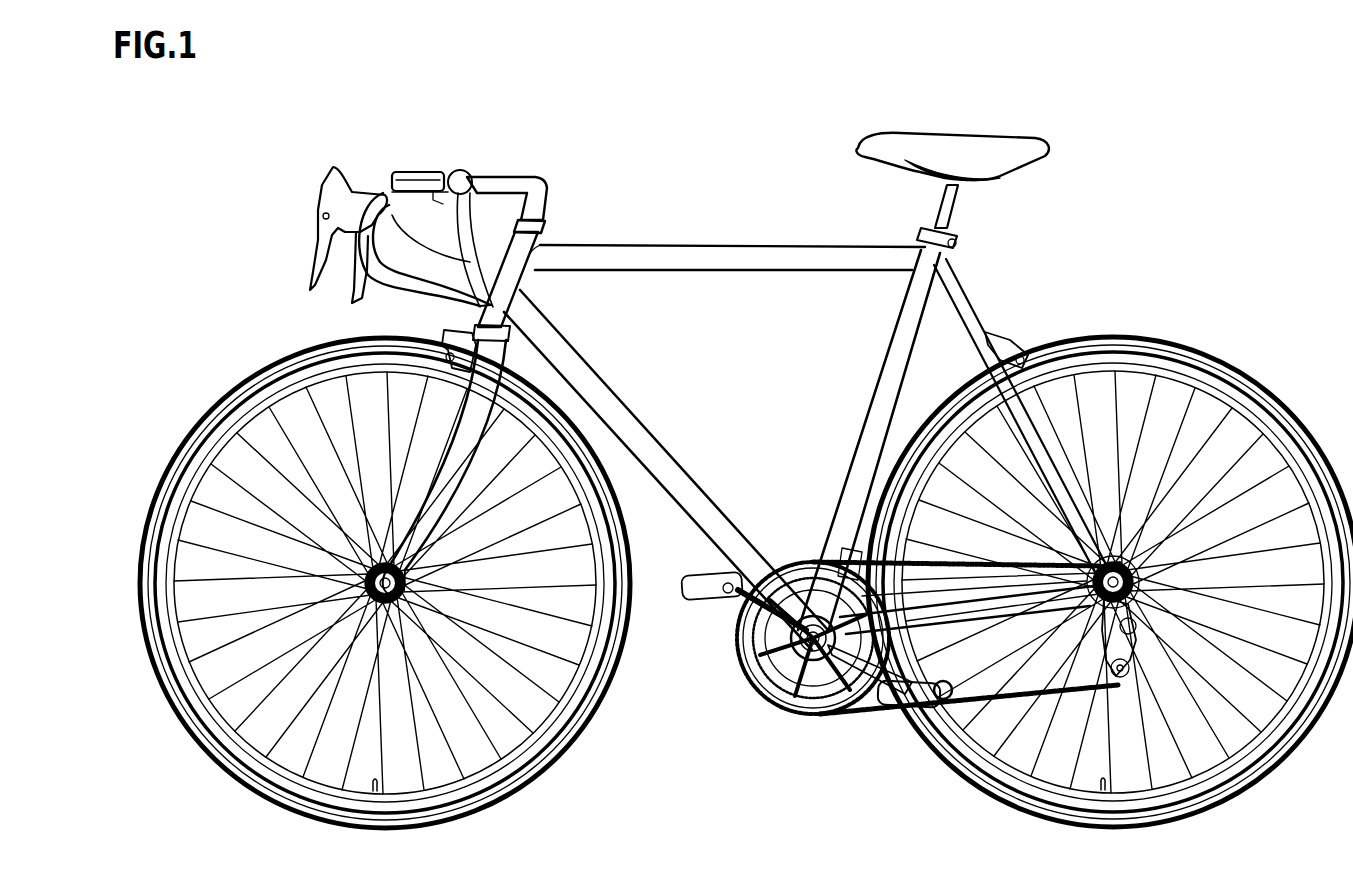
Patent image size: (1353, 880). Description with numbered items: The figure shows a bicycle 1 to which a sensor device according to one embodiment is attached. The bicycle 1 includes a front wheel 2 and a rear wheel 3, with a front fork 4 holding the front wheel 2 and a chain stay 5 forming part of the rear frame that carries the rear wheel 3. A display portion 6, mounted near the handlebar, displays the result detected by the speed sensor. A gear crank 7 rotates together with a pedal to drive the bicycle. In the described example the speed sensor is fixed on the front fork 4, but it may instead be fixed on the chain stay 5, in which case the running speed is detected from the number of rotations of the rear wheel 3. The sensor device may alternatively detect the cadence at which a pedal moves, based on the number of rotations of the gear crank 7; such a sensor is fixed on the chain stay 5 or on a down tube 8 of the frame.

The bicycle 1 is at (710, 200).
The front wheel 2 is at (216, 410).
The rear wheel 3 is at (1140, 340).
The front fork 4 is at (435, 512).
The chain stay 5 is at (1000, 607).
The display portion 6 is at (418, 182).
The gear crank 7 is at (848, 660).
The down tube 8 is at (692, 490).